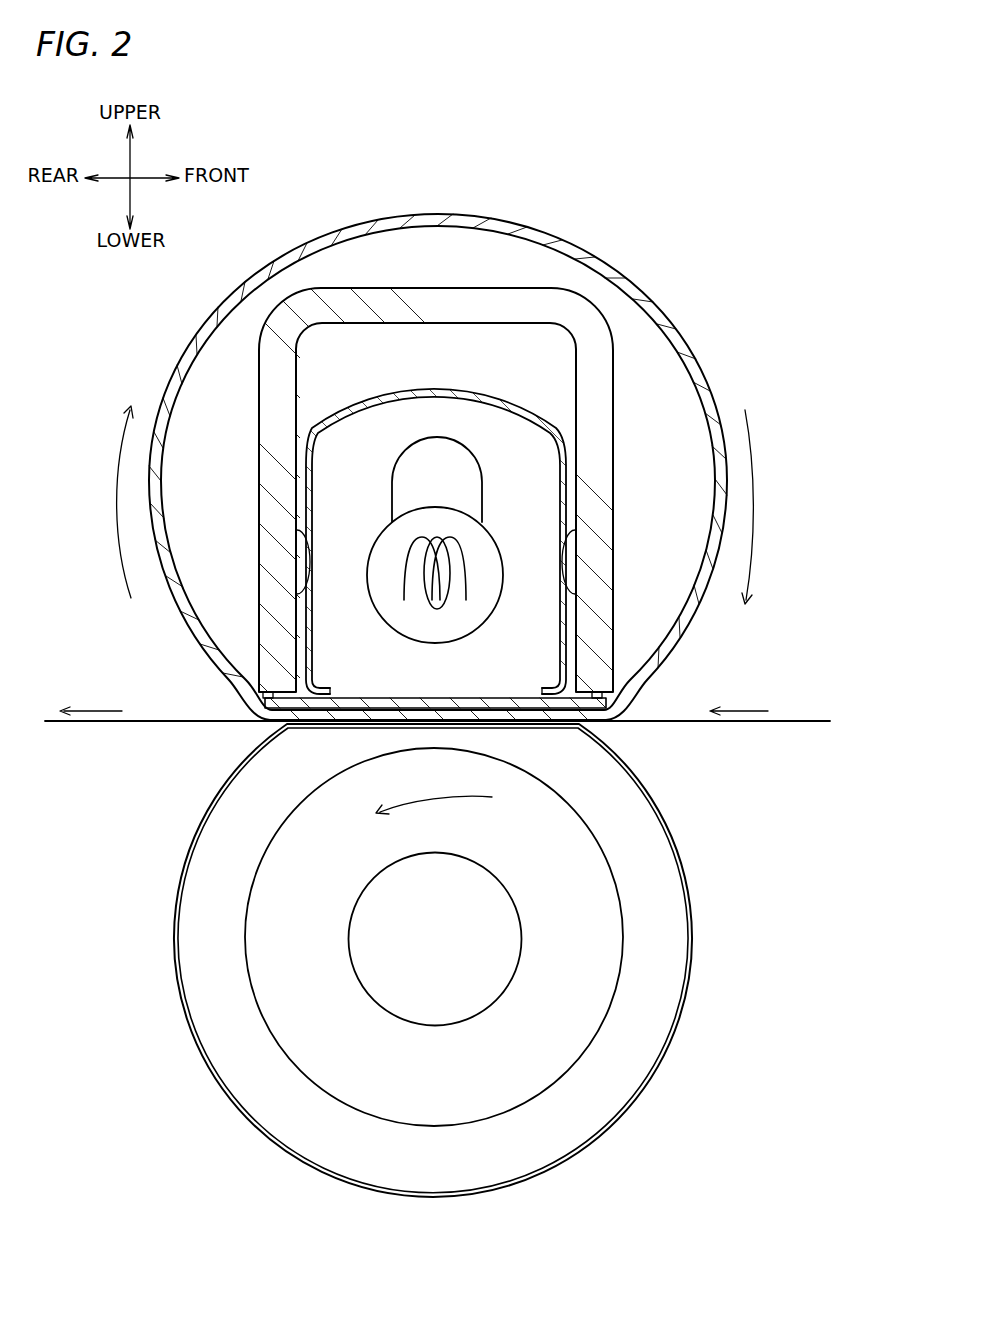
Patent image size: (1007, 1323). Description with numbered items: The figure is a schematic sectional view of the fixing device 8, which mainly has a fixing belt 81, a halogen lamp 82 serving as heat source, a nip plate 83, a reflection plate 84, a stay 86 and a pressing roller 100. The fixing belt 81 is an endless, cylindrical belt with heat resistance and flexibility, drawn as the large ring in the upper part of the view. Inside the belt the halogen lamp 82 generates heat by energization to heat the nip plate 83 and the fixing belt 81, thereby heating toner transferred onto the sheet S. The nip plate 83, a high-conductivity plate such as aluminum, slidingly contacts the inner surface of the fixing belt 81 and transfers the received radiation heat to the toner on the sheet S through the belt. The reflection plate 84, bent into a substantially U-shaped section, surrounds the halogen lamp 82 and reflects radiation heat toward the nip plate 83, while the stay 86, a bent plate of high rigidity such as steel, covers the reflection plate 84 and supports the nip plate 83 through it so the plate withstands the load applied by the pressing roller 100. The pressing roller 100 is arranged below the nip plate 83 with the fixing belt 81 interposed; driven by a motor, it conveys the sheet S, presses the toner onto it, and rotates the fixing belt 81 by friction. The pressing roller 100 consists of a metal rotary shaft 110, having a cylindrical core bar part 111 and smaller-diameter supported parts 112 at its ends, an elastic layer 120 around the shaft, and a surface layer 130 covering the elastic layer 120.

The fixing device 8 is at (642, 175).
The fixing belt 81 is at (633, 296).
The halogen lamp 82 is at (513, 595).
The nip plate 83 is at (394, 700).
The reflection plate 84 is at (546, 407).
The stay 86 is at (496, 277).
The pressing roller 100 is at (496, 960).
The rotary shaft 110 is at (566, 939).
The core bar part 111 is at (592, 933).
The supported part 112 is at (498, 962).
The elastic layer 120 is at (641, 1030).
The surface layer 130 is at (651, 1086).
The sheet S is at (794, 720).